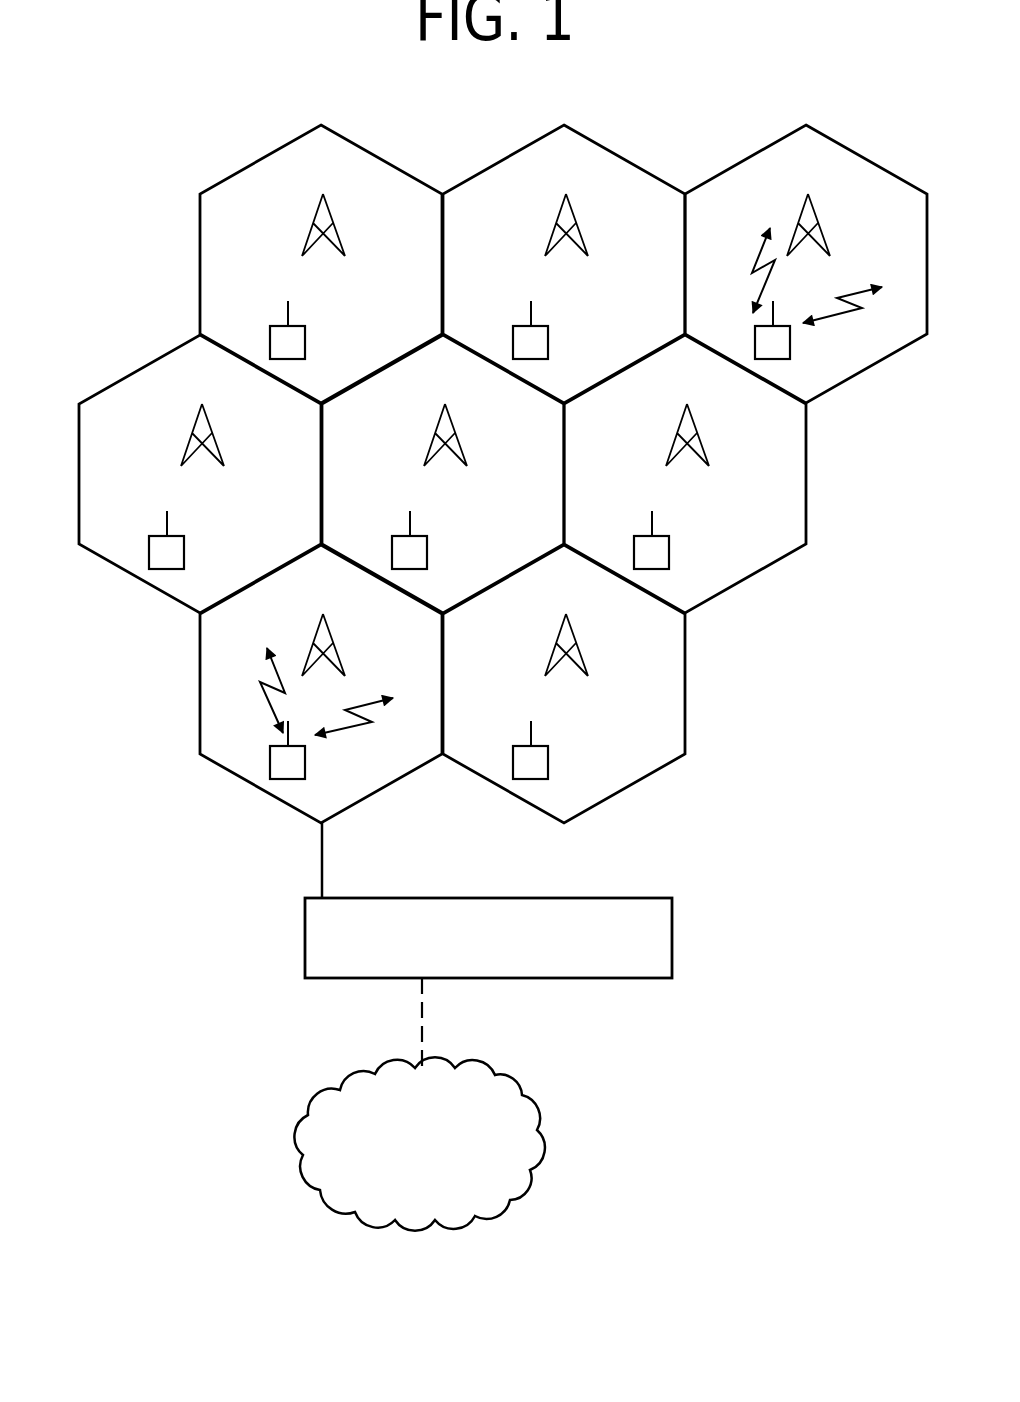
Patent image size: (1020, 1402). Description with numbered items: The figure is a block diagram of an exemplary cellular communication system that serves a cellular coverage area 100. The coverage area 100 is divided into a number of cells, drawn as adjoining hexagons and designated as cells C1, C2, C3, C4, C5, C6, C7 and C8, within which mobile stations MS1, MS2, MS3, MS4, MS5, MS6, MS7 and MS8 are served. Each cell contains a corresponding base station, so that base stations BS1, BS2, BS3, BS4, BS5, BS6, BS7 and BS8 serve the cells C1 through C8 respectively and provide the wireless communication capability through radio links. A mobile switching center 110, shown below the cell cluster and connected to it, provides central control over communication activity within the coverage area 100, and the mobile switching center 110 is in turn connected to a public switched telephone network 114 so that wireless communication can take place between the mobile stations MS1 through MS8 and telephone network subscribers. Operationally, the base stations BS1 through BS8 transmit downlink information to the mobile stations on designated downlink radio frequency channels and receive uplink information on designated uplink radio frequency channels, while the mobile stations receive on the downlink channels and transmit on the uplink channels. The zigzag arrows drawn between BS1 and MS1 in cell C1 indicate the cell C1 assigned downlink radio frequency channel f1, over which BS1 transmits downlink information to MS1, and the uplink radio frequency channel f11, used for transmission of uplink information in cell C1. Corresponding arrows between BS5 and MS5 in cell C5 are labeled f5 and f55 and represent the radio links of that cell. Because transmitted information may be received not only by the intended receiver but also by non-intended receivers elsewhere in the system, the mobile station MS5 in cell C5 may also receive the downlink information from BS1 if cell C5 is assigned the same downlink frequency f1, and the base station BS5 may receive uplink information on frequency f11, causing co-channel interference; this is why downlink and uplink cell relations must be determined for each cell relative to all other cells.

The cellular coverage area 100 is at (503, 474).
The Mobile Switching Center (MSC) 110 is at (672, 933).
The PSTN 114 is at (535, 1123).
The cell C1 is at (321, 684).
The cell C2 is at (200, 474).
The cell C3 is at (321, 264).
The cell C4 is at (564, 264).
The cell C5 is at (806, 264).
The cell C6 is at (443, 474).
The cell C7 is at (685, 474).
The cell C8 is at (564, 684).
The base station BS1 is at (323, 664).
The base station BS2 is at (202, 454).
The base station BS3 is at (323, 244).
The base station BS4 is at (566, 244).
The base station BS5 is at (808, 244).
The base station BS6 is at (445, 454).
The base station BS7 is at (687, 454).
The base station BS8 is at (566, 664).
The mobile station MS1 is at (321, 750).
The mobile station MS2 is at (200, 540).
The mobile station MS3 is at (321, 330).
The mobile station MS4 is at (564, 330).
The mobile station MS5 is at (806, 330).
The mobile station MS6 is at (443, 540).
The mobile station MS7 is at (685, 540).
The mobile station MS8 is at (564, 750).
The downlink radio frequency channel f1 is at (365, 695).
The uplink radio frequency channel f11 is at (250, 672).
The frequency f5 link between BS5 and MS5 f5 is at (746, 270).
The frequency f55 link between BS5 and MS5 f55 is at (857, 285).